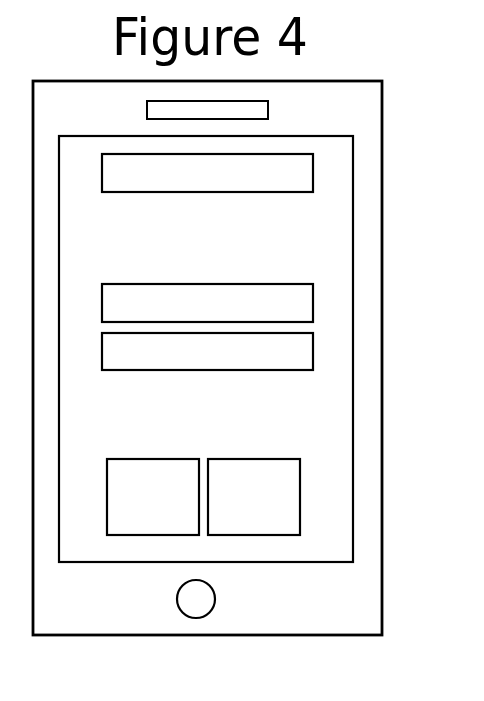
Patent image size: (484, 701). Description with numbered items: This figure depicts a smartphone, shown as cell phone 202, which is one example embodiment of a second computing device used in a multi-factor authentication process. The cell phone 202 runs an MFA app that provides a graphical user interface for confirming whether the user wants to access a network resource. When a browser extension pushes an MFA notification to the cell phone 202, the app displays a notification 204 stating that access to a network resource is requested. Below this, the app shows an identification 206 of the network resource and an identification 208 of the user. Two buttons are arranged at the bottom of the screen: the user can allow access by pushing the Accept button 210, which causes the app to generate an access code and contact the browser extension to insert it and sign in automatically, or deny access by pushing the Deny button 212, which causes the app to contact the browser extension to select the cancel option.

The cell phone 202 is at (365, 81).
The notification 204 is at (108, 192).
The identification of the network resource 206 is at (218, 284).
The identification of the user 208 is at (128, 370).
The Accept button 210 is at (240, 459).
The Deny button 212 is at (116, 459).